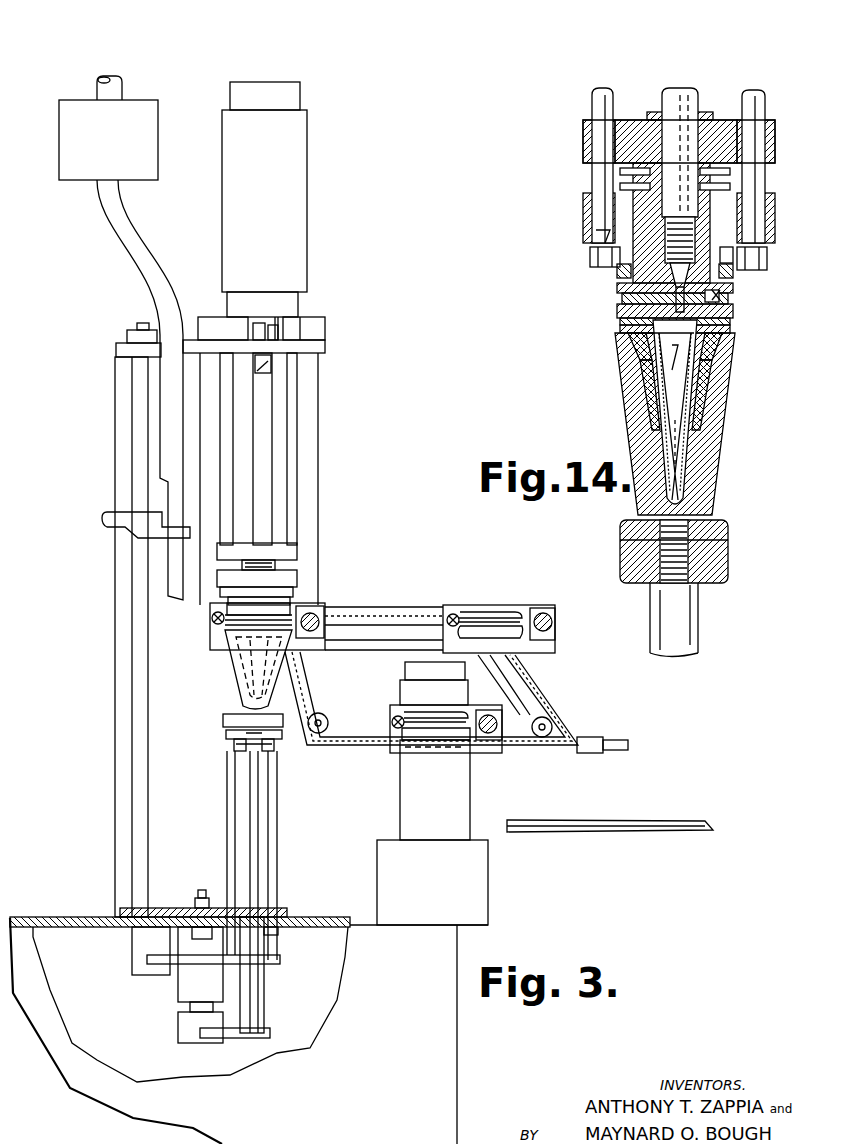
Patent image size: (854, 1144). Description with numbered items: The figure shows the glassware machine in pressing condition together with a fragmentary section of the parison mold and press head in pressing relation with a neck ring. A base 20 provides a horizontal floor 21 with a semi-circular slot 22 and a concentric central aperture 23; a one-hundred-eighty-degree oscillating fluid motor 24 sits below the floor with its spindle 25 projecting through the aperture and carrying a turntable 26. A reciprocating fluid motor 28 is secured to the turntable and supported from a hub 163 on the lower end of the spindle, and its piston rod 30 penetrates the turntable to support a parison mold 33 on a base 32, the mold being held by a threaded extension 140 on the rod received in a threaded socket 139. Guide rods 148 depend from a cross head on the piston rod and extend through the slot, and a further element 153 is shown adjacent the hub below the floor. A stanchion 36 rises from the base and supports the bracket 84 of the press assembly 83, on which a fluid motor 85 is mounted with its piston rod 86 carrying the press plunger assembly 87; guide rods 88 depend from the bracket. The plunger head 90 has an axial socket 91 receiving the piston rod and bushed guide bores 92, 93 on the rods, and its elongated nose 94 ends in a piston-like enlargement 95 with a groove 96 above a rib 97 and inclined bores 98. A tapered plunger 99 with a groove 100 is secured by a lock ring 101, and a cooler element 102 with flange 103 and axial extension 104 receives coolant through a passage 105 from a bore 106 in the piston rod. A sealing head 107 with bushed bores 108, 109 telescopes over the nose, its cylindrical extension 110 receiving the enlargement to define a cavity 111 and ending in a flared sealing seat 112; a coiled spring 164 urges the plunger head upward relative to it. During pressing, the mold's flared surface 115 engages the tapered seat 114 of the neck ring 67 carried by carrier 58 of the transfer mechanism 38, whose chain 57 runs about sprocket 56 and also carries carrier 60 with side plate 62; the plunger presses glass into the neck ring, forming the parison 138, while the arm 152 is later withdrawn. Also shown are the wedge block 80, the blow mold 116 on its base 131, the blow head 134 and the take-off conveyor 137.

In FIG. 3, the base 20 is at (455, 1020).
In FIG. 3, the horizontal floor 21 is at (328, 928).
In FIG. 3, the semi-circular slot 22 is at (275, 933).
In FIG. 3, the central aperture 23 is at (197, 930).
In FIG. 3, the oscillating fluid motor 24 is at (185, 985).
In FIG. 3, the spindle 25 is at (200, 898).
In FIG. 3, the turntable 26 is at (160, 908).
In FIG. 3, the reciprocating fluid motor 28 is at (258, 997).
In FIG. 3, the piston rod 30 is at (258, 822).
In FIG. 14, the piston rod 30 is at (690, 607).
In FIG. 3, the base or platform 32 is at (223, 720).
In FIG. 14, the base or platform 32 is at (622, 547).
In FIG. 3, the parison mold 33 is at (226, 660).
In FIG. 14, the parison mold 33 is at (717, 415).
In FIG. 3, the stanchion 36 is at (140, 420).
In FIG. 3, the transfer mechanism 38 is at (402, 585).
In FIG. 3, the sprocket 56 is at (385, 735).
In FIG. 3, the continuous chain 57 is at (345, 620).
In FIG. 3, the carrier 58 is at (212, 640).
In FIG. 3, the carrier 60 is at (520, 607).
In FIG. 3, the side plate 62 is at (230, 1038).
In FIG. 14, the neck ring assembly 67 is at (620, 320).
In FIG. 3, the wedge block 80 is at (590, 738).
In FIG. 3, the press assembly 83 is at (339, 287).
In FIG. 3, the bracket 84 is at (320, 346).
In FIG. 3, the fluid motor 85 is at (298, 183).
In FIG. 3, the piston rod 86 is at (262, 422).
In FIG. 14, the piston rod 86 is at (670, 100).
In FIG. 3, the press plunger assembly 87 is at (311, 566).
In FIG. 14, the press plunger assembly 87 is at (559, 108).
In FIG. 3, the guide rods 88 is at (222, 455).
In FIG. 14, the guide rods 88 is at (598, 106).
In FIG. 14, the plunger head 90 is at (626, 118).
In FIG. 14, the axial socket 91 is at (640, 114).
In FIG. 14, the bushed guide bore 92 is at (590, 140).
In FIG. 14, the bushed guide bore 93 is at (758, 140).
In FIG. 14, the nose 94 is at (598, 250).
In FIG. 14, the piston-like enlargement 95 is at (733, 256).
In FIG. 14, the peripheral groove 96 is at (620, 290).
In FIG. 14, the reduced peripheral rib 97 is at (625, 299).
In FIG. 14, the inclined bores 98 is at (620, 269).
In FIG. 14, the tapered plunger 99 is at (676, 410).
In FIG. 14, the peripheral groove 100 is at (733, 318).
In FIG. 14, the lock ring 101 is at (720, 300).
In FIG. 14, the cooler element 102 is at (650, 385).
In FIG. 14, the peripheral flange 103 is at (733, 330).
In FIG. 14, the axial extension 104 is at (630, 332).
In FIG. 14, the passage 105 is at (680, 347).
In FIG. 14, the bore 106 is at (686, 110).
In FIG. 14, the sealing head 107 is at (626, 187).
In FIG. 14, the bushed bore 108 is at (590, 214).
In FIG. 14, the bushed bore 109 is at (760, 192).
In FIG. 14, the cylindrical extension 110 is at (758, 240).
In FIG. 14, the cavity 111 is at (608, 222).
In FIG. 14, the flared sealing seat 112 is at (763, 296).
In FIG. 14, the tapered sealing seat 114 is at (720, 362).
In FIG. 14, the flared sealing surface 115 is at (720, 346).
In FIG. 3, the blow mold 116 is at (470, 790).
In FIG. 3, the base 131 is at (488, 890).
In FIG. 3, the blow head 134 is at (400, 695).
In FIG. 3, the take-off conveyor 137 is at (565, 832).
In FIG. 3, the parison 138 is at (242, 666).
In FIG. 14, the parison 138 is at (700, 456).
In FIG. 14, the threaded socket 139 is at (728, 541).
In FIG. 14, the threaded extension 140 is at (662, 562).
In FIG. 3, the guide rods 148 is at (228, 800).
In FIG. 3, the arm 152 is at (275, 964).
In FIG. 3, the block 153 is at (140, 942).
In FIG. 3, the hub 163 is at (185, 1030).
In FIG. 14, the coiled spring 164 is at (628, 172).